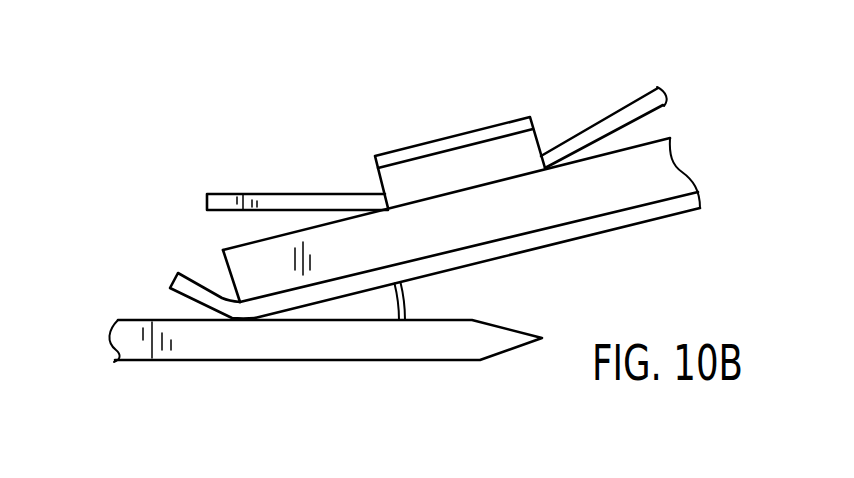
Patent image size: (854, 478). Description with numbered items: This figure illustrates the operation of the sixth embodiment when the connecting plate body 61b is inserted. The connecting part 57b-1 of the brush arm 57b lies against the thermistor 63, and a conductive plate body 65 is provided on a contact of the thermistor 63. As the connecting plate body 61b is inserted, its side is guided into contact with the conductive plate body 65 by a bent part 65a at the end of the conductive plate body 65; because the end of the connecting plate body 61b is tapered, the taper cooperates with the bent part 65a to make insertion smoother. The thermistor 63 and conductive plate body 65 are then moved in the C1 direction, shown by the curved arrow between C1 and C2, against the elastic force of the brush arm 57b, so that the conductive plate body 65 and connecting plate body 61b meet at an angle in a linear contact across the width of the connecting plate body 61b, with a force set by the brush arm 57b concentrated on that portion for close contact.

The brush arm 57b is at (615, 111).
The connecting part 57b-1 is at (449, 163).
The connecting plate body 61b is at (298, 347).
The thermistor 63 is at (667, 168).
The conductive plate body 65 is at (588, 225).
The bent part 65a is at (220, 300).
The C1 direction C1 is at (240, 157).
The rotation direction C2 is at (258, 160).